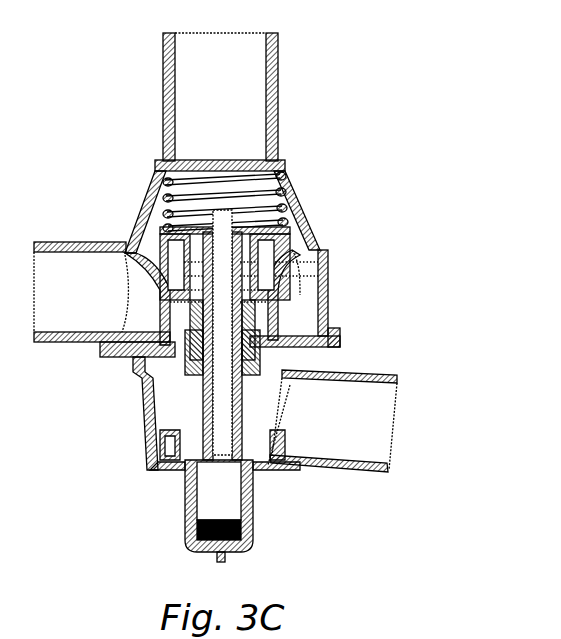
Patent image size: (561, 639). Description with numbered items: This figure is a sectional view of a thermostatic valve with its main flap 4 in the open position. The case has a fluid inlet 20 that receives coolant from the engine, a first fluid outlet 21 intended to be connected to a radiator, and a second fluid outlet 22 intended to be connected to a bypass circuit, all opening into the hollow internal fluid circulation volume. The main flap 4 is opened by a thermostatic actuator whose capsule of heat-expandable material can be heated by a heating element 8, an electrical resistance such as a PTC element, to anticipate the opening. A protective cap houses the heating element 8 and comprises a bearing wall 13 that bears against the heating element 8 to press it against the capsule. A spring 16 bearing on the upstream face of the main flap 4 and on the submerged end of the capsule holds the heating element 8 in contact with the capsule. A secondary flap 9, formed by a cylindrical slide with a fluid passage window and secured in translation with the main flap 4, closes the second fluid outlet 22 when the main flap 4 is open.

The main flap 4 is at (258, 232).
The heating element 8 is at (238, 552).
The secondary flap 9 is at (168, 366).
The bearing wall 13 is at (190, 527).
The spring 16 is at (295, 295).
The fluid inlet 20 is at (355, 372).
The first fluid outlet 21 is at (280, 60).
The second fluid outlet 22 is at (66, 244).